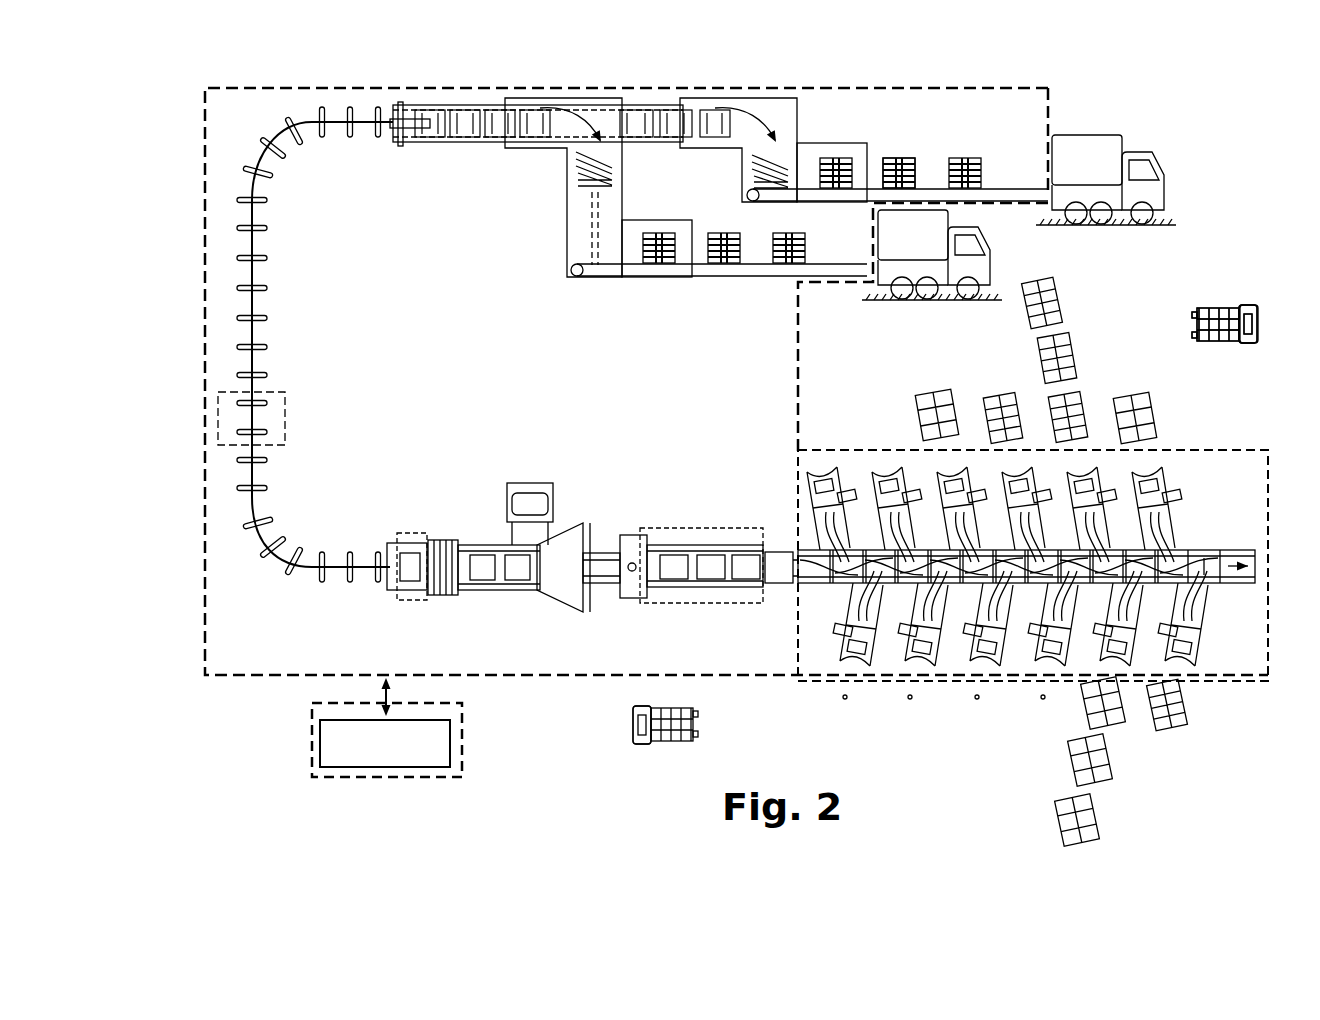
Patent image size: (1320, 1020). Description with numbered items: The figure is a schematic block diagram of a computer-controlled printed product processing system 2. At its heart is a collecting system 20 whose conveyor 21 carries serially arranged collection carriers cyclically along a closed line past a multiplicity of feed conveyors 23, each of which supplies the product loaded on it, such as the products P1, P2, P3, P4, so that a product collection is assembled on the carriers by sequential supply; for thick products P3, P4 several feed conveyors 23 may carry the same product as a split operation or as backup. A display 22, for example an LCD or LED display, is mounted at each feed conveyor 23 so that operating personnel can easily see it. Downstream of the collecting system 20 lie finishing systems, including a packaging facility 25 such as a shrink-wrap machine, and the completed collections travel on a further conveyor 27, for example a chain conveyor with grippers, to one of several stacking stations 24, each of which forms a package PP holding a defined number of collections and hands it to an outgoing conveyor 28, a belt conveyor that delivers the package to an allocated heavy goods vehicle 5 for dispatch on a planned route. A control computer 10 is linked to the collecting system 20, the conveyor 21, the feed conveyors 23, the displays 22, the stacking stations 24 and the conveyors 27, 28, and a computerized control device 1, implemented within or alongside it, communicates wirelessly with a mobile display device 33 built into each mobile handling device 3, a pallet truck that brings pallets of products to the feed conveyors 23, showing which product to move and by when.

The control device 1 is at (323, 755).
The printed product processing system 2 is at (240, 693).
The mobile handling device 3 is at (927, 524).
The heavy goods vehicle 5 is at (1002, 238).
The control computer 10 is at (460, 735).
The collecting system 20 is at (785, 482).
The conveyor 21 is at (1208, 552).
The display 22 is at (1015, 563).
The feed conveyor 23 is at (1202, 480).
The stacking station 24 is at (548, 227).
The packaging facility 25 is at (468, 512).
The further conveyor 27 is at (298, 349).
The outgoing conveyor 28 is at (1005, 193).
The mobile display device 33 is at (949, 524).
The package PP is at (913, 137).
The product P1 is at (940, 392).
The product P2 is at (1010, 393).
The product P3 is at (928, 519).
The product P4 is at (1092, 601).